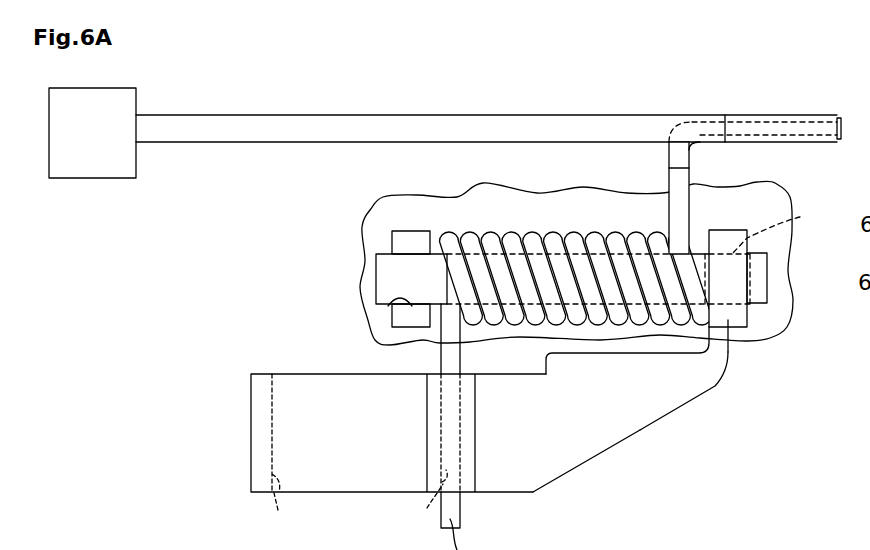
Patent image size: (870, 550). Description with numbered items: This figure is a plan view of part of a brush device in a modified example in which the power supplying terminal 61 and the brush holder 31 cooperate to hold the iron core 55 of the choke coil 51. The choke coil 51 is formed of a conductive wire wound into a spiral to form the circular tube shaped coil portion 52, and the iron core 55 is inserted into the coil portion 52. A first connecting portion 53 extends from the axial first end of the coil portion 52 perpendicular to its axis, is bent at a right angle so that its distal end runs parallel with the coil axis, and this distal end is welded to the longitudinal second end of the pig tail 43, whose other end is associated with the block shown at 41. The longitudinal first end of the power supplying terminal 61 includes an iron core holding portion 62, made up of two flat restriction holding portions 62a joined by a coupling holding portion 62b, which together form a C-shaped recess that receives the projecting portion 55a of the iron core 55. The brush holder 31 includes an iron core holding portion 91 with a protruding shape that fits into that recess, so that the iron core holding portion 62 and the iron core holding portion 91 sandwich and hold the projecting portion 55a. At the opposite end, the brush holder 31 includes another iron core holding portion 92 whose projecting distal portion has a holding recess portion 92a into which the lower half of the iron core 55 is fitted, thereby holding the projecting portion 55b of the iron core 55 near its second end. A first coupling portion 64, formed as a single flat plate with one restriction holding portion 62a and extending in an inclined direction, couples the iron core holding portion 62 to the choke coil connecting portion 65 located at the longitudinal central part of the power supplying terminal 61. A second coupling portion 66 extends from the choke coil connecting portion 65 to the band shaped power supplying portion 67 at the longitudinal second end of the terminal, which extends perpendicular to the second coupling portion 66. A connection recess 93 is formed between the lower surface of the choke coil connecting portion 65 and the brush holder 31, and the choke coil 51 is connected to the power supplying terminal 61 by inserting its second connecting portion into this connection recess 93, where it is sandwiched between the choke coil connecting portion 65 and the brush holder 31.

The brush holder 31 is at (455, 197).
The drive source 41 is at (93, 179).
The pig tail 43 is at (243, 125).
The choke coil 51 is at (469, 231).
The coil portion 52 is at (563, 233).
The first connecting portion 53 is at (683, 176).
The iron core 55 is at (437, 265).
The projecting portion 55a is at (740, 287).
The projecting portion 55b is at (387, 277).
The power supplying terminal 61 is at (614, 445).
The iron core holding portion 62 is at (745, 266).
The restriction holding portion 62a is at (730, 226).
The coupling holding portion 62b is at (769, 286).
The first coupling portion 64 is at (670, 411).
The choke coil connecting portion 65 is at (465, 480).
The second coupling portion 66 is at (370, 486).
The power supplying portion 67 is at (277, 455).
The iron core holding portion 91 is at (782, 228).
The iron core holding portion 92 is at (400, 238).
The holding recess portion 92a is at (395, 300).
The connection recess 93 is at (427, 503).